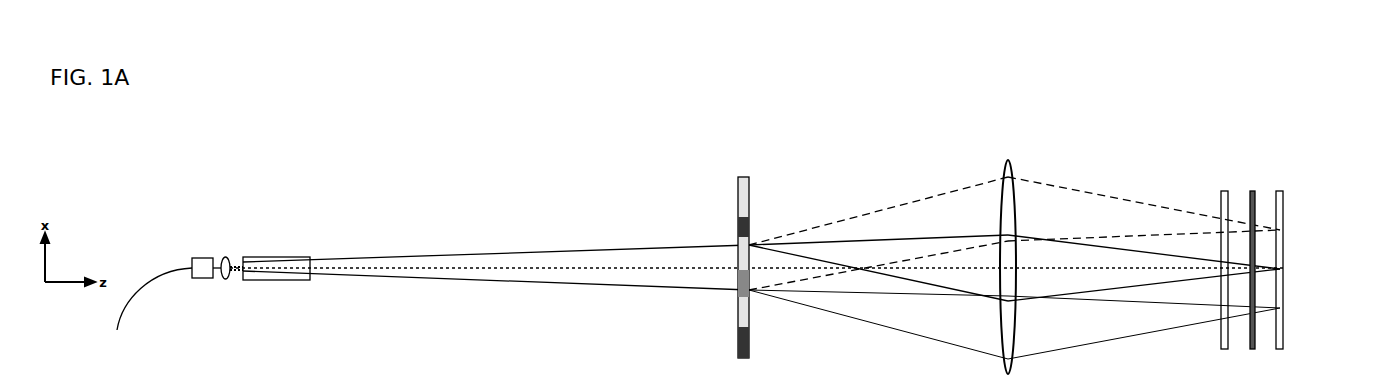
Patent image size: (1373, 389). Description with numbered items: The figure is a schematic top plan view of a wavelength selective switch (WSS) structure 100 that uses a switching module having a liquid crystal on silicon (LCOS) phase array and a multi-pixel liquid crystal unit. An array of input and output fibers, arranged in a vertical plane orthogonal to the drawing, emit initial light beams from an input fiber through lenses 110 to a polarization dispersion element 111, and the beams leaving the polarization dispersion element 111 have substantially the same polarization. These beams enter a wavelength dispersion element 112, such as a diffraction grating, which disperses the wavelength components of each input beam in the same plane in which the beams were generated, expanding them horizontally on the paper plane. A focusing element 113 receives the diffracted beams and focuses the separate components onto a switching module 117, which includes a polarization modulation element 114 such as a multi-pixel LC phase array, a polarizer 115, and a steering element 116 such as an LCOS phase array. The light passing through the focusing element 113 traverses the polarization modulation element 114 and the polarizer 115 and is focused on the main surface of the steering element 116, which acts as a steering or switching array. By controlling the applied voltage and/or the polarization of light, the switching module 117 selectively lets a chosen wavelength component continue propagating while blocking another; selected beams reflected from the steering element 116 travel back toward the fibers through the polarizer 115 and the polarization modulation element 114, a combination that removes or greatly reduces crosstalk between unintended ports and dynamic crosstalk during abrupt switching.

The wavelength selective switch (WSS) structure 100 is at (505, 192).
The lenses 110 is at (215, 250).
The polarization dispersion element 111 is at (277, 256).
The wavelength dispersion element 112 is at (745, 175).
The focusing element 113 is at (1007, 157).
The polarization modulation element 114 is at (1218, 185).
The polarizer 115 is at (1251, 185).
The steering element 116 is at (1292, 180).
The switching module 117 is at (1342, 112).